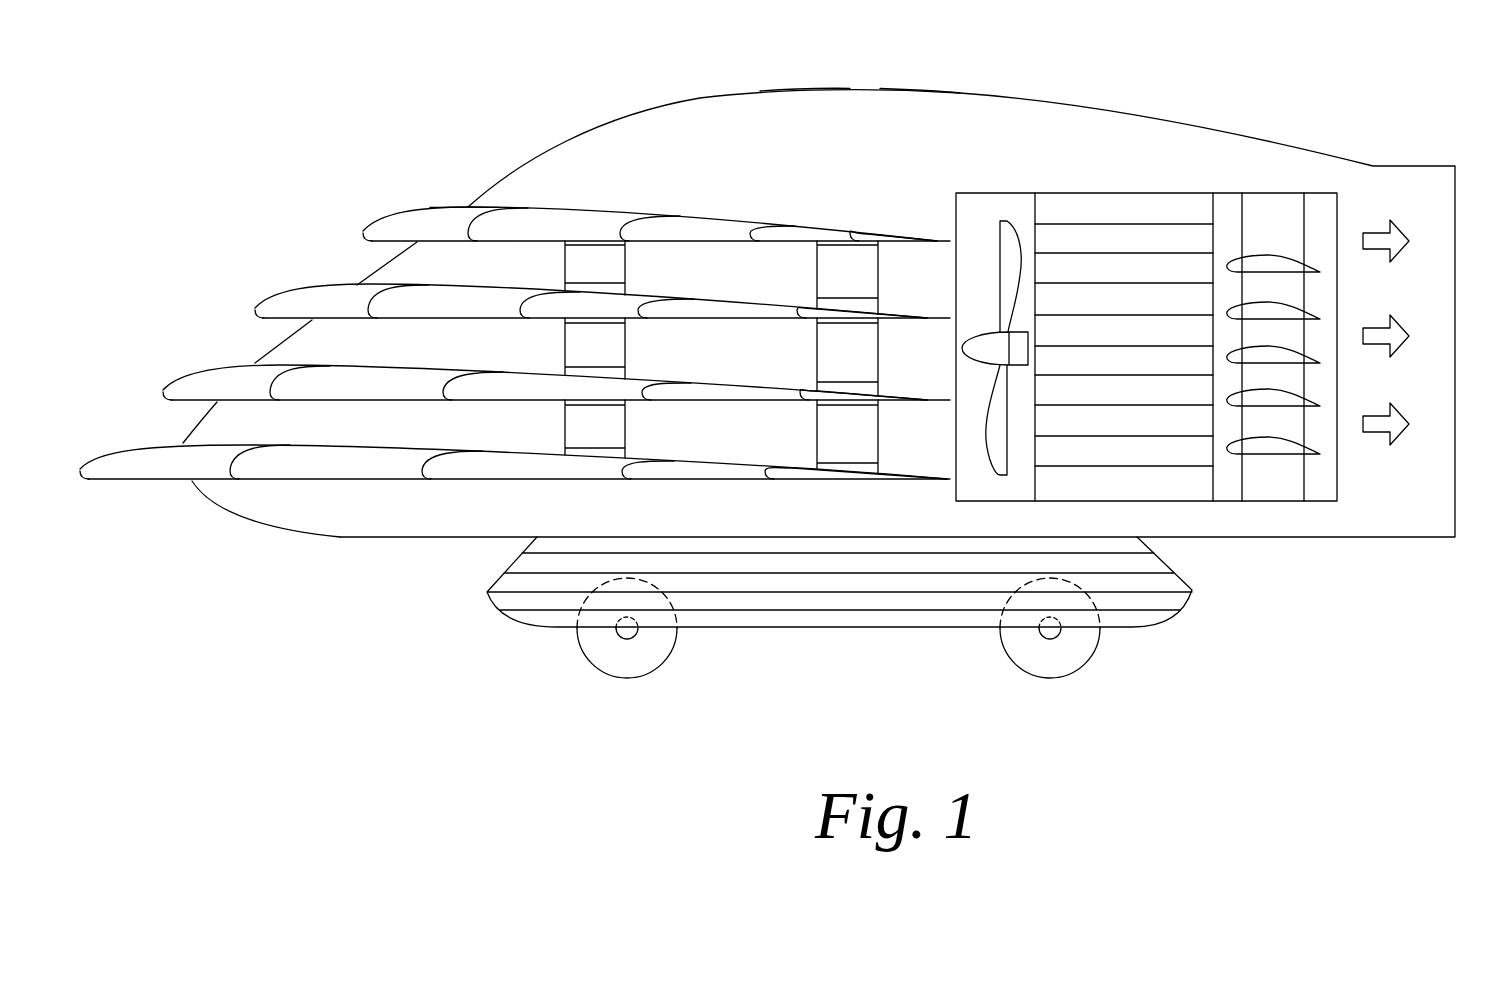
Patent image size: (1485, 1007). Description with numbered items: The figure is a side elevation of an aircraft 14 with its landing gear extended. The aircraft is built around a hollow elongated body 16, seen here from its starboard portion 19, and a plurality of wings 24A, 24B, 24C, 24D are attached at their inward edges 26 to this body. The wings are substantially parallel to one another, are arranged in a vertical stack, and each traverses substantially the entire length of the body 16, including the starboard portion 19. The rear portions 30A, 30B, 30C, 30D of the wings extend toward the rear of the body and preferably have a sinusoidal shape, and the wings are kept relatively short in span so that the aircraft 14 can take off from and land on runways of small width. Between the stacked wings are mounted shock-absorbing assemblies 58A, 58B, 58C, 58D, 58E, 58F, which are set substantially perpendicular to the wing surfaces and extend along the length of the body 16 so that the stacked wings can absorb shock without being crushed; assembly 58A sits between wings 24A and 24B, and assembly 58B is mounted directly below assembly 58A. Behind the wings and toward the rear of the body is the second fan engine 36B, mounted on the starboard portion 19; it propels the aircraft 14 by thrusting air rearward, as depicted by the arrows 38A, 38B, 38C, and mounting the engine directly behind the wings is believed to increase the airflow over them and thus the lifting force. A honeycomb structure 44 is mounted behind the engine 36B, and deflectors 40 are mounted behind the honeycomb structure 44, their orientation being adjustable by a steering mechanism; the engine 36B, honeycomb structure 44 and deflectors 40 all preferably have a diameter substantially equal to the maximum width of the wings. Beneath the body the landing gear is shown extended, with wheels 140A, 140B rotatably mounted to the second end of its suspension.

The aircraft 14 is at (650, 104).
The hollow elongated body 16 is at (897, 90).
The starboard portion 19 is at (823, 92).
The inward edges 26 is at (467, 205).
The wing 24A is at (390, 218).
The wing 24B is at (293, 293).
The wing 24C is at (217, 373).
The wing 24D is at (157, 448).
The rear portion of wing 30A is at (917, 235).
The rear portion of wing 30B is at (897, 312).
The rear portion of wing 30C is at (897, 392).
The rear portion of wing 30D is at (895, 472).
The shock-absorbing assembly 58A is at (627, 272).
The shock-absorbing assembly 58B is at (628, 357).
The shock-absorbing assembly 58C is at (627, 437).
The shock-absorbing assembly 58D is at (817, 285).
The shock-absorbing assembly 58E is at (817, 363).
The shock-absorbing assembly 58F is at (817, 448).
The second fan engine 36B is at (995, 192).
The honeycomb structure 44 is at (1084, 192).
The deflectors 40 is at (1249, 195).
The airflow arrow 38A is at (1363, 240).
The airflow arrow 38B is at (1363, 335).
The airflow arrow 38C is at (1363, 423).
The wheel 140A is at (1090, 658).
The wheel 140B is at (657, 665).